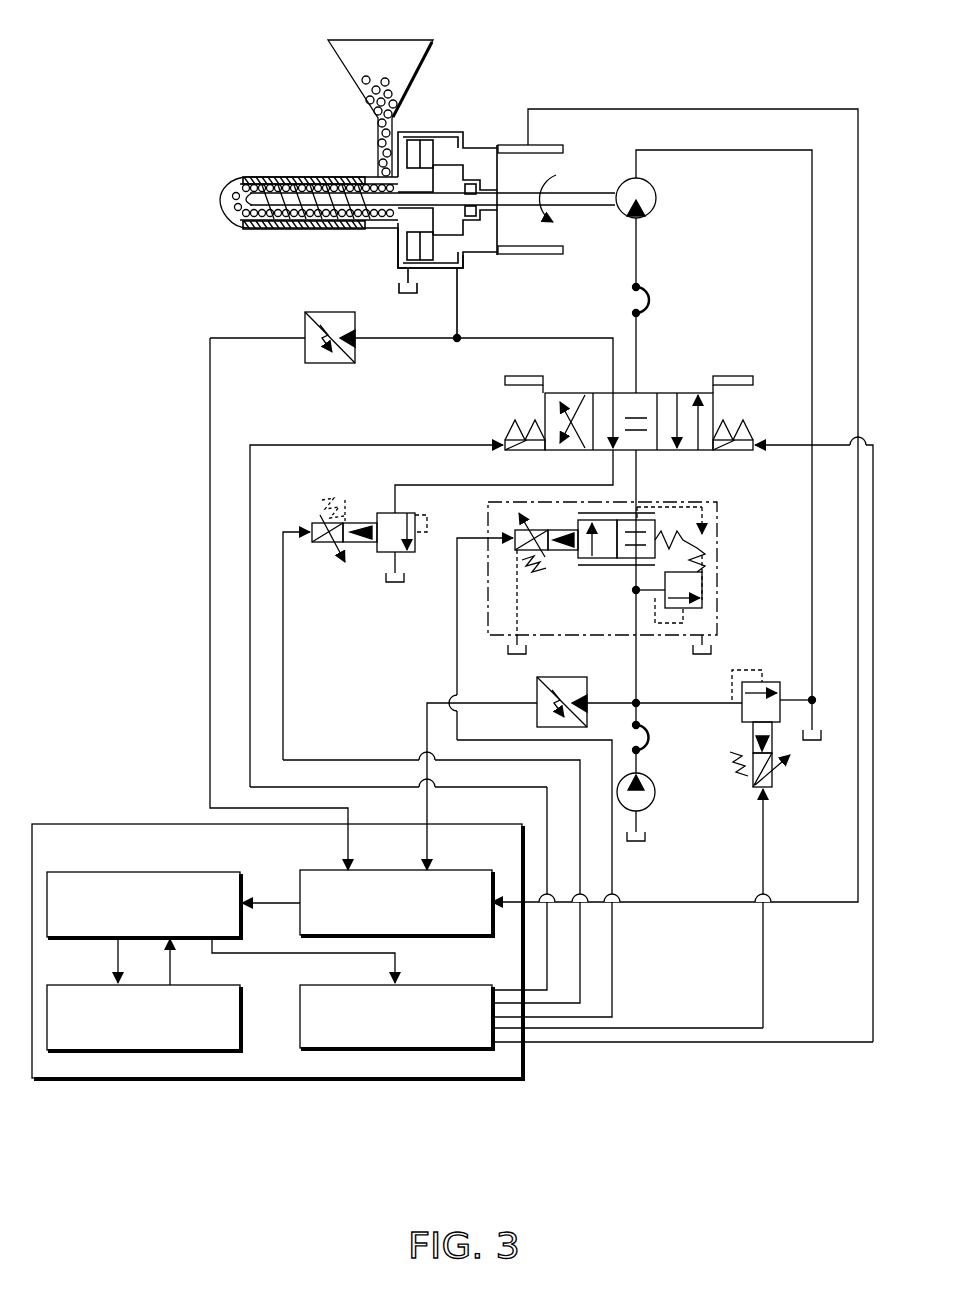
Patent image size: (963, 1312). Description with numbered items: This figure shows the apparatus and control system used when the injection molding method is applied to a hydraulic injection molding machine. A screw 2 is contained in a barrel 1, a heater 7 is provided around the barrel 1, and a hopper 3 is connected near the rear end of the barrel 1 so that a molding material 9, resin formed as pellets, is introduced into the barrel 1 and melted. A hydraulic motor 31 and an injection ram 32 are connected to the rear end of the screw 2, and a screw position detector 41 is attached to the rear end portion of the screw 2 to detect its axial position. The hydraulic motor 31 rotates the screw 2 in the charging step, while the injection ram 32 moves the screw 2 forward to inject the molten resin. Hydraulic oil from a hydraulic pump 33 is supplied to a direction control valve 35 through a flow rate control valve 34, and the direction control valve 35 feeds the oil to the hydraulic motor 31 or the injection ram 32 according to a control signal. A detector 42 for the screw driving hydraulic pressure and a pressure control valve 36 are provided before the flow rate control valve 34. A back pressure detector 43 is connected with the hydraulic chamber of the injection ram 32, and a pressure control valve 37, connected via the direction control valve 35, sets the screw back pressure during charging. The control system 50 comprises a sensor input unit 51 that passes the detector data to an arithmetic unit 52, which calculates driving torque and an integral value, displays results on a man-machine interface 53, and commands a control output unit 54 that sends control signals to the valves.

The barrel 1 is at (297, 177).
The screw 2 is at (262, 200).
The hopper 3 is at (337, 53).
The heater 7 is at (332, 177).
The molding material 9 is at (390, 80).
The hydraulic motor 31 is at (657, 198).
The injection ram 32 is at (487, 258).
The hydraulic pump 33 is at (657, 792).
The flow rate control valve 34 is at (717, 598).
The direction control valve 35 is at (713, 452).
The pressure control valve 36 is at (742, 716).
The pressure control valve 37 is at (390, 510).
The screw position detector 41 is at (512, 140).
The detector for detecting a screw driving hydraulic pressure 42 is at (565, 677).
The back pressure detector 43 is at (333, 312).
The control system 50 is at (273, 1078).
The sensor input unit 51 is at (453, 870).
The arithmetic unit 52 is at (138, 872).
The man-machine interface 53 is at (97, 985).
The control output unit 54 is at (455, 985).